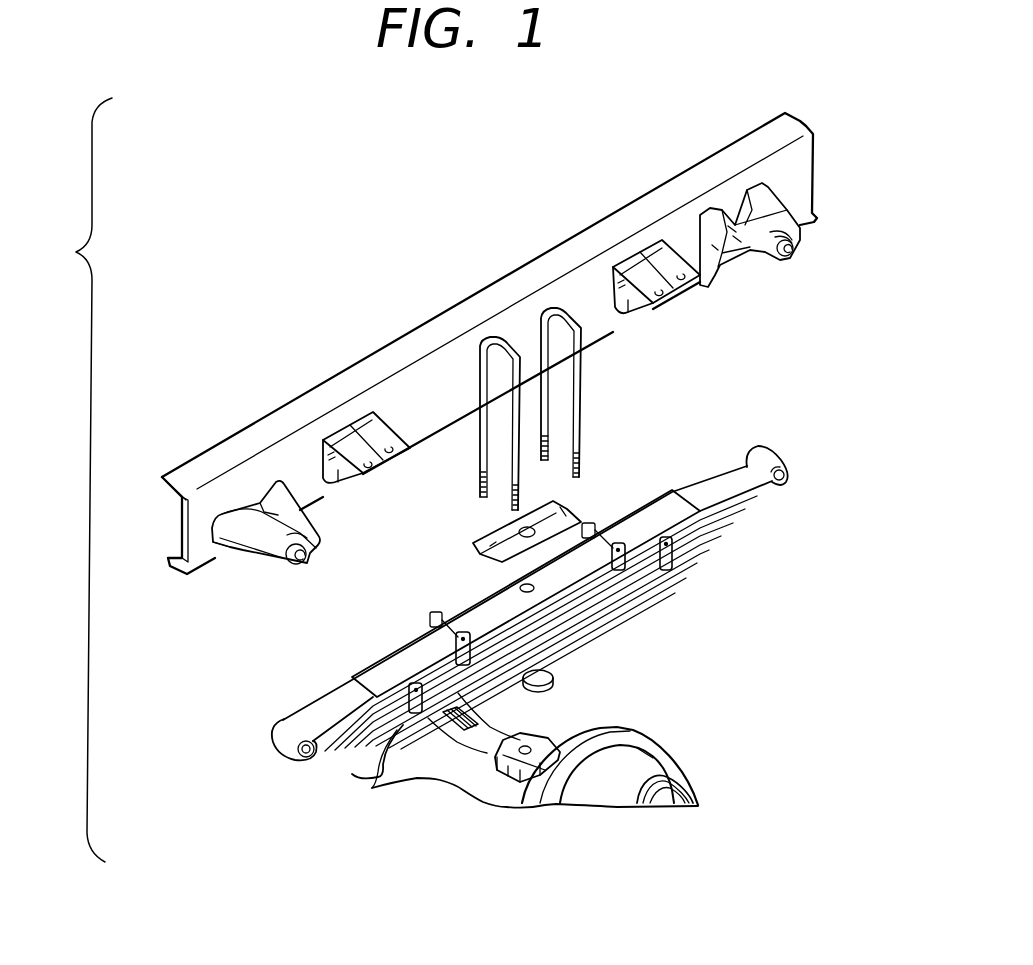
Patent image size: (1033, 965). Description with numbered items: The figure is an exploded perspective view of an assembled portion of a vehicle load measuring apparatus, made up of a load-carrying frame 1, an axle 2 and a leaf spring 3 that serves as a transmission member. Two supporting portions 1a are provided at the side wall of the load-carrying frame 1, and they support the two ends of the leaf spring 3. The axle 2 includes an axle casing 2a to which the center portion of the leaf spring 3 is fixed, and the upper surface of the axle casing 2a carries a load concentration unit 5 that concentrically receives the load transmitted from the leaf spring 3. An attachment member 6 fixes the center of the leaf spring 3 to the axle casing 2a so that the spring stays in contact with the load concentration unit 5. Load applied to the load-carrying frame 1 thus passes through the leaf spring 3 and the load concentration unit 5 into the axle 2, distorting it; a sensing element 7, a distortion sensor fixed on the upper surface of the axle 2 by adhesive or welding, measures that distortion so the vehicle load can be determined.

The load-carrying frame 1 is at (523, 264).
The supporting portions 1a is at (297, 570).
The axle 2 is at (468, 778).
The axle casing 2a is at (543, 742).
The leaf spring 3 is at (697, 542).
The load concentration unit 5 is at (558, 675).
The attachment member 6 is at (605, 437).
The sensing element 7 is at (453, 727).